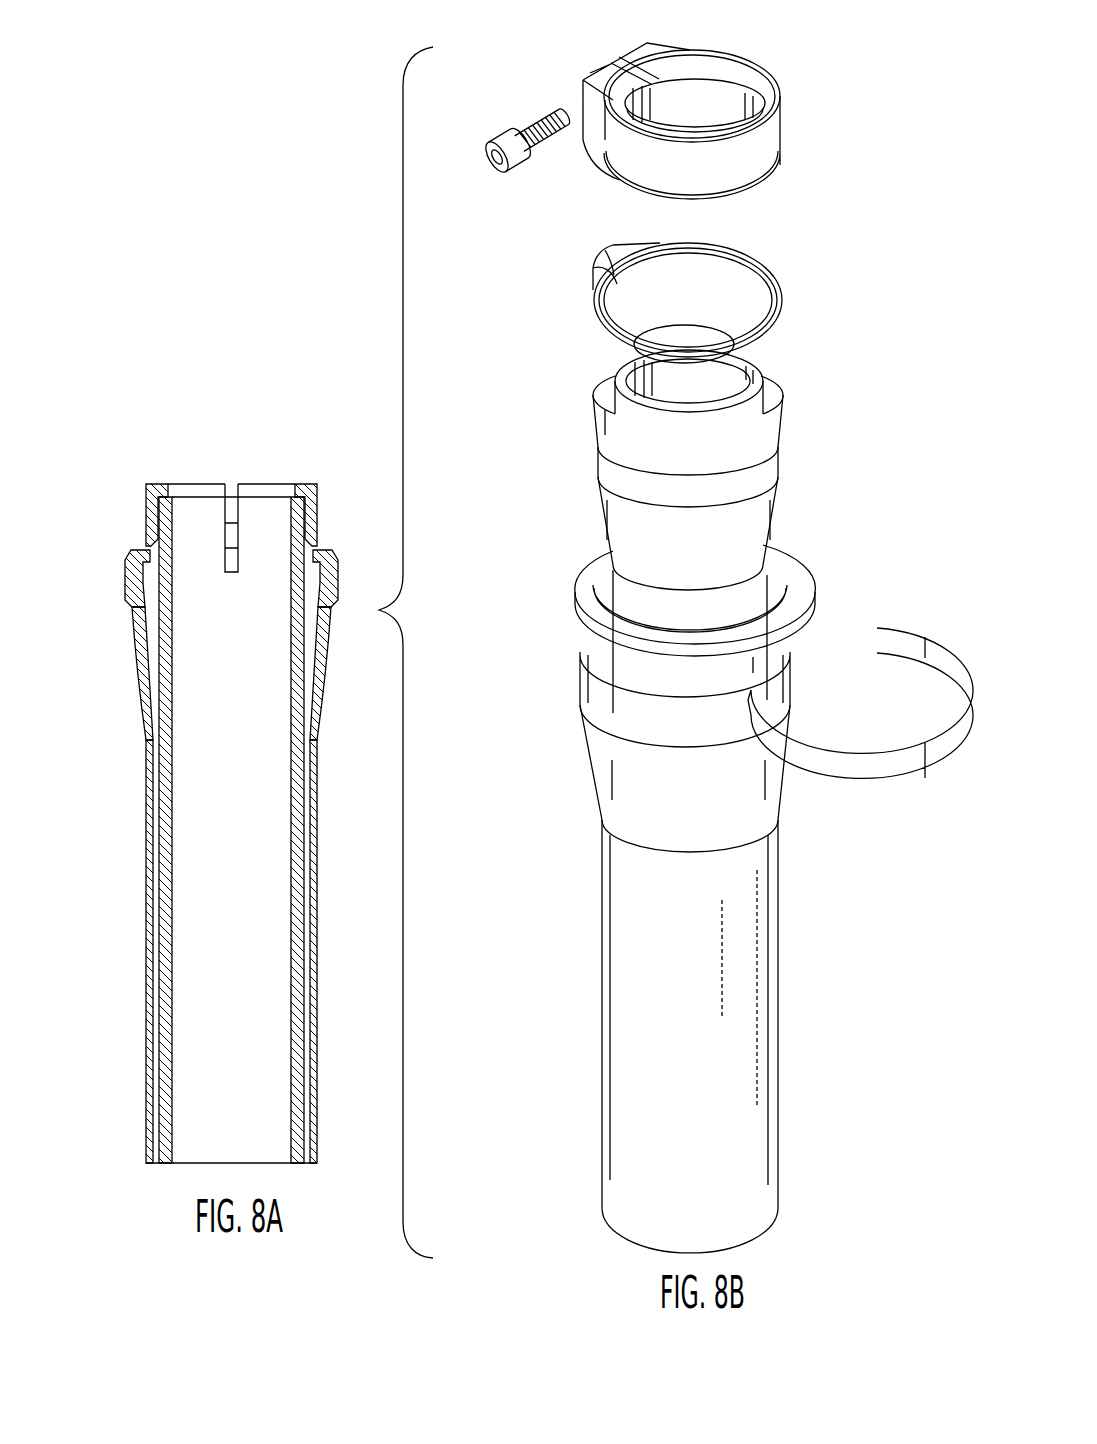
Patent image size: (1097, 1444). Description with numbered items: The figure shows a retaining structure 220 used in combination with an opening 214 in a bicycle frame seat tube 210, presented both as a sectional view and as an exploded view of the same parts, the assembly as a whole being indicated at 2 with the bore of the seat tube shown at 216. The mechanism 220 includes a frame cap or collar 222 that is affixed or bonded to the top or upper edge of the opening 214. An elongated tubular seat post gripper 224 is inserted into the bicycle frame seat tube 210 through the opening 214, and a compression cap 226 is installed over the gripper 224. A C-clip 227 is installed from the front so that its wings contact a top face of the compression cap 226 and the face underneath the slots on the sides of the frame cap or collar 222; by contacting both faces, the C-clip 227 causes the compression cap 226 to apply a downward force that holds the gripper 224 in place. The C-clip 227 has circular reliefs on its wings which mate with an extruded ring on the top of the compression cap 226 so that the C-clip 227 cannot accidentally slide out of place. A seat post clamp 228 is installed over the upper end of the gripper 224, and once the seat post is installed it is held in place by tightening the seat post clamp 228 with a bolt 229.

In FIG. 8B, the coupling device 2 is at (673, 899).
In FIG. 8A, the bicycle frame (seat tube) 210 is at (172, 1100).
In FIG. 8B, the bicycle frame (seat tube) 210 is at (598, 765).
In FIG. 8A, the opening 214 is at (125, 525).
In FIG. 8B, the bore 216 is at (742, 1015).
In FIG. 8A, the retaining structure 220 is at (115, 625).
In FIG. 8A, the frame cap or collar 222 is at (128, 556).
In FIG. 8B, the frame cap or collar 222 is at (575, 600).
In FIG. 8B, the elongated tubular seat post gripper 224 is at (597, 470).
In FIG. 8B, the compression cap 226 is at (598, 322).
In FIG. 8B, the C-clip 227 is at (938, 645).
In FIG. 8A, the seat post clamp 228 is at (147, 485).
In FIG. 8B, the seat post clamp 228 is at (600, 170).
In FIG. 8B, the bolt 229 is at (483, 170).